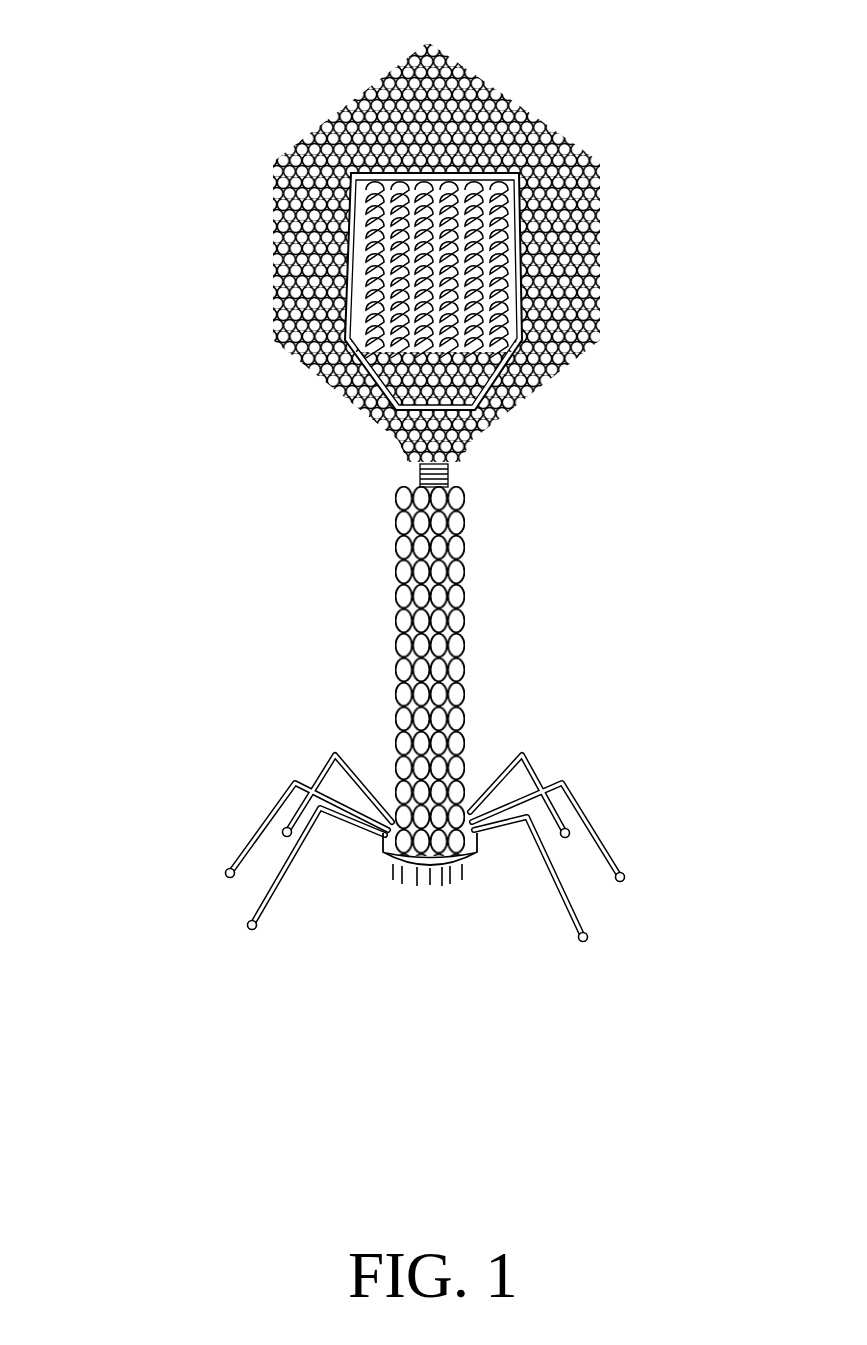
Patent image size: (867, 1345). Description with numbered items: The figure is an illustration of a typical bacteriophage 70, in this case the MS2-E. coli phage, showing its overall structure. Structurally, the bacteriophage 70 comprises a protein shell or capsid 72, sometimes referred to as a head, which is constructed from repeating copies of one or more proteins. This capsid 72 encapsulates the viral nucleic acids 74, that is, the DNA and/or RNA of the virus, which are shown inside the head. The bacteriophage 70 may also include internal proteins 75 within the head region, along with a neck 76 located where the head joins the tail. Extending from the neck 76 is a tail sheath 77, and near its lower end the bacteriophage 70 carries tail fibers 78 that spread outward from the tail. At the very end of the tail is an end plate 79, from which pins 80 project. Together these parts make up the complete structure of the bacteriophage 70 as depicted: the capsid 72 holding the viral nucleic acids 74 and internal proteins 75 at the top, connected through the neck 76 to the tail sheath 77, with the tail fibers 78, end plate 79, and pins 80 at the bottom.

The bacteriophage 70 is at (633, 78).
The capsid 72 is at (600, 190).
The viral nucleic acids 74 is at (358, 238).
The internal proteins 75 is at (533, 387).
The neck 76 is at (420, 464).
The tail sheath 77 is at (455, 596).
The tail fibers 78 is at (585, 815).
The end plate 79 is at (383, 857).
The pins 80 is at (450, 868).